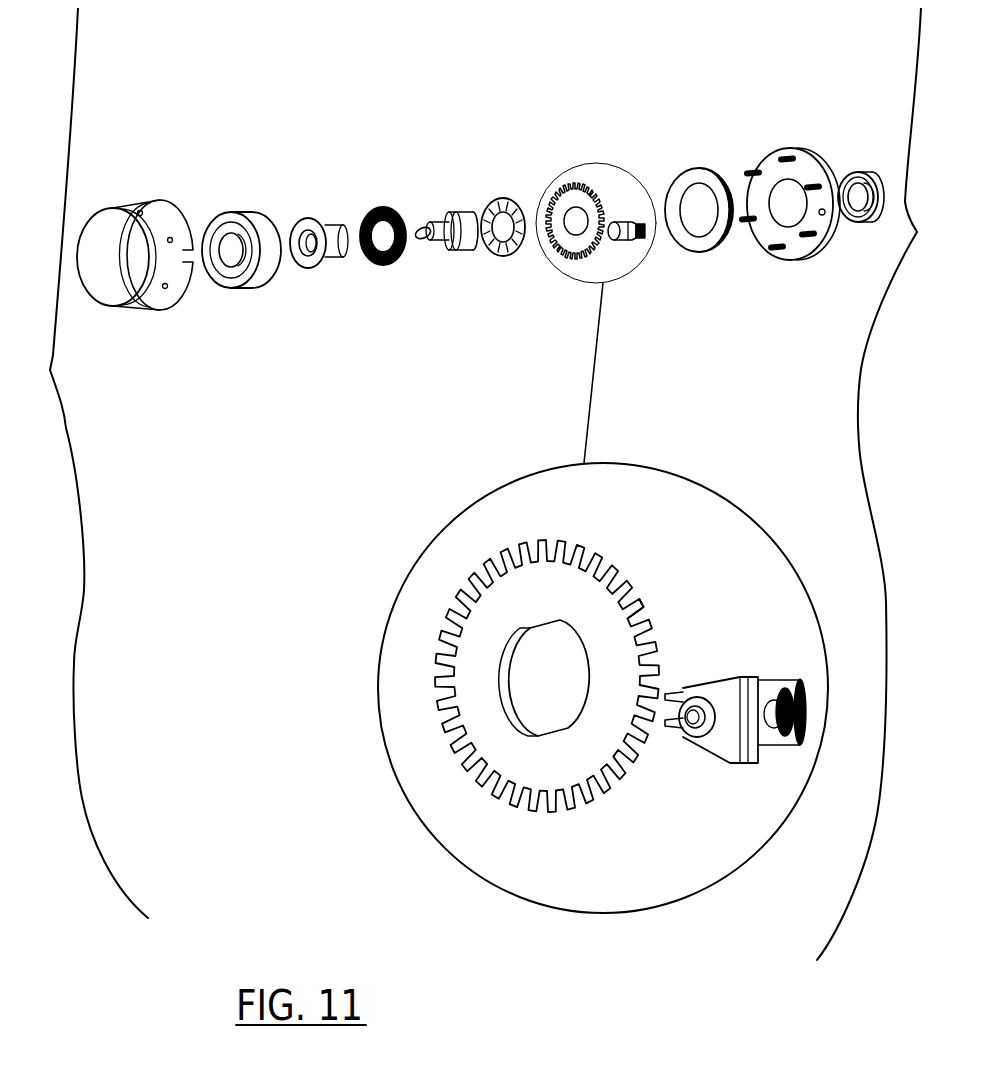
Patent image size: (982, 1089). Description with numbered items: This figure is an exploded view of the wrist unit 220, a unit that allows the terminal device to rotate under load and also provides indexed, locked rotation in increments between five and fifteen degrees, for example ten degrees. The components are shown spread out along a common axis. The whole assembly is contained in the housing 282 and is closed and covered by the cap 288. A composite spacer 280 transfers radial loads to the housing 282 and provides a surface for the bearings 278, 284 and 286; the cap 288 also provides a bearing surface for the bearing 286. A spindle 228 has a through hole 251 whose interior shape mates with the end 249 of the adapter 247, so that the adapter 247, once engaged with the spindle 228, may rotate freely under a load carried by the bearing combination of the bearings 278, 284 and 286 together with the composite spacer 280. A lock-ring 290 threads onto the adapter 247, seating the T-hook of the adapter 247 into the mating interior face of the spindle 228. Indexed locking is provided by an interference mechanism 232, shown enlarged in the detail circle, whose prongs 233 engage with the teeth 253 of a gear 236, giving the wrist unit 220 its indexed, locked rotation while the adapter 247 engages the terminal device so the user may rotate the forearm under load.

The wrist unit 220 is at (464, 484).
The housing 282 is at (165, 207).
The composite spacer 280 is at (253, 217).
The spindle 228 is at (332, 259).
The through hole 251 is at (292, 254).
The bearing 278 is at (390, 217).
The adapter 247 is at (459, 242).
The end of the adapter 249 is at (422, 238).
The bearing 284 is at (510, 198).
The gear 236 is at (568, 187).
The interference mechanism 232 is at (623, 242).
The prongs 233 is at (673, 690).
The teeth 253 is at (645, 590).
The bearing 286 is at (687, 180).
The cap 288 is at (765, 165).
The lock-ring 290 is at (868, 178).